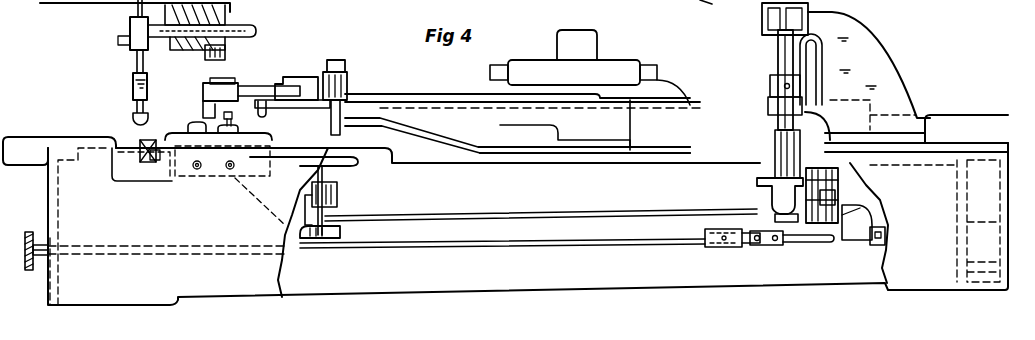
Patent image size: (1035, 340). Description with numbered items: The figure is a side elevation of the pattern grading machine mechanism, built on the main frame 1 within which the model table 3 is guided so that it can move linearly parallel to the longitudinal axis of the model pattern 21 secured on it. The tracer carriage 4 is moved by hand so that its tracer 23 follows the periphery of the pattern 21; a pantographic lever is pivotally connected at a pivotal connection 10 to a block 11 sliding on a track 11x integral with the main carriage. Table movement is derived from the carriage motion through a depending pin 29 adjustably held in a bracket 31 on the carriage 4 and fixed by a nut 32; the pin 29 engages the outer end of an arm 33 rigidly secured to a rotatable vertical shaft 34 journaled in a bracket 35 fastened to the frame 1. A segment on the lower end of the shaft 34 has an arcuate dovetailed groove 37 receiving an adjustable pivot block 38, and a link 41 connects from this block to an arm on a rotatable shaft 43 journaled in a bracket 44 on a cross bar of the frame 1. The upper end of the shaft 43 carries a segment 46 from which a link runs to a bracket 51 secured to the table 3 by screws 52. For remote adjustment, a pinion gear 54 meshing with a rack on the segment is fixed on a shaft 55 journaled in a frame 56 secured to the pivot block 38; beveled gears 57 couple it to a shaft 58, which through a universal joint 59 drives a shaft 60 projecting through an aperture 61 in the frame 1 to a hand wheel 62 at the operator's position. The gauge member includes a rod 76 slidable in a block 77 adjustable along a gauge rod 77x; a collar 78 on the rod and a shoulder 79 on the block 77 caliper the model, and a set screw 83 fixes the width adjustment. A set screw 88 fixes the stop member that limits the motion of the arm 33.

The main frame 1 is at (48, 291).
The model table 3 is at (150, 142).
The tracer carriage 4 is at (203, 92).
The pivotal connection 10 is at (570, 32).
The block 11 is at (625, 60).
The track 11x is at (658, 58).
The model pattern 21 is at (183, 133).
The tracer 23 is at (278, 79).
The depending pin 29 is at (342, 104).
The bracket 31 is at (317, 75).
The nut 32 is at (345, 68).
The arm 33 is at (473, 150).
The vertical shaft 34 is at (778, 55).
The bracket 35 is at (860, 58).
The arcuate dovetailed groove 37 is at (757, 182).
The pivot block 38 is at (840, 192).
The link 41 is at (518, 213).
The rotatable shaft 43 is at (338, 198).
The bracket 44 is at (340, 226).
The segment 46 is at (347, 160).
The bracket 51 is at (188, 175).
The screws 52 is at (231, 176).
The pinion gear 54 is at (870, 165).
The shaft 55 is at (845, 200).
The frame 56 is at (865, 216).
The beveled gears 57 is at (830, 240).
The shaft 58 is at (806, 245).
The universal joint 59 is at (773, 248).
The shaft 60 is at (678, 246).
The aperture 61 is at (58, 240).
The hand wheel 62 is at (25, 240).
The gauge rod 76 is at (137, 60).
The block 77 is at (130, 37).
The gauge rod 77x is at (255, 28).
The collar 78 is at (133, 83).
The shoulder 79 is at (133, 20).
The set screw 83 is at (225, 52).
The set screw 88 is at (705, 3).